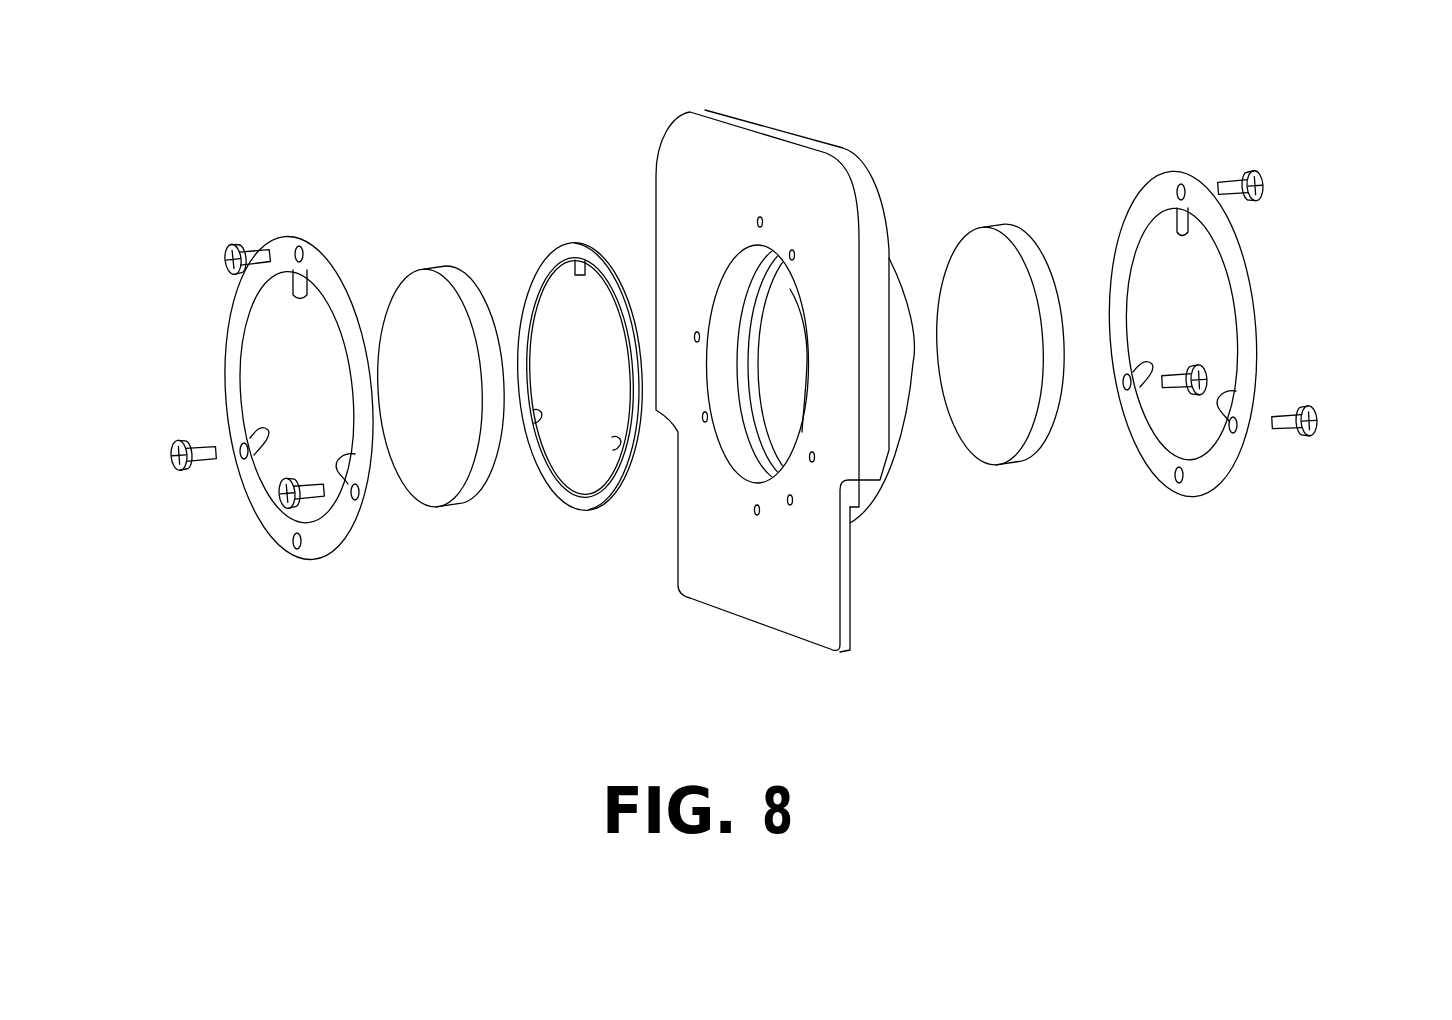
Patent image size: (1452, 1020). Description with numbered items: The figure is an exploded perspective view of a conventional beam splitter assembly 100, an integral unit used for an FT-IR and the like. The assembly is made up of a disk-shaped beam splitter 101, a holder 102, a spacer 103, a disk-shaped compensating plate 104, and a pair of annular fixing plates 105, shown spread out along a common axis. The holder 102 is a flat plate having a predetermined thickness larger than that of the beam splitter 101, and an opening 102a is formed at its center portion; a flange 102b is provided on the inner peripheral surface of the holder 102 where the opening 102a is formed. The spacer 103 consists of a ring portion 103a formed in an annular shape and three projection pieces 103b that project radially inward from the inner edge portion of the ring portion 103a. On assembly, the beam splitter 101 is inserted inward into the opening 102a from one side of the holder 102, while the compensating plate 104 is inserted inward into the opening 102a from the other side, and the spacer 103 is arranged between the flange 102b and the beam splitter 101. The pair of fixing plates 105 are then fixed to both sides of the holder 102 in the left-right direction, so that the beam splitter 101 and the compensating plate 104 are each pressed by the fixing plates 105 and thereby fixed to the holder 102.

The beam splitter assembly 100 is at (1071, 116).
The beam splitter 101 is at (428, 269).
The holder 102 is at (797, 346).
The opening 102a is at (706, 292).
The flange 102b is at (757, 300).
The spacer 103 is at (580, 364).
The ring portion 103a is at (573, 502).
The projection pieces 103b is at (535, 417).
The compensating plate 104 is at (1000, 227).
The fixing plates 105 is at (321, 265).